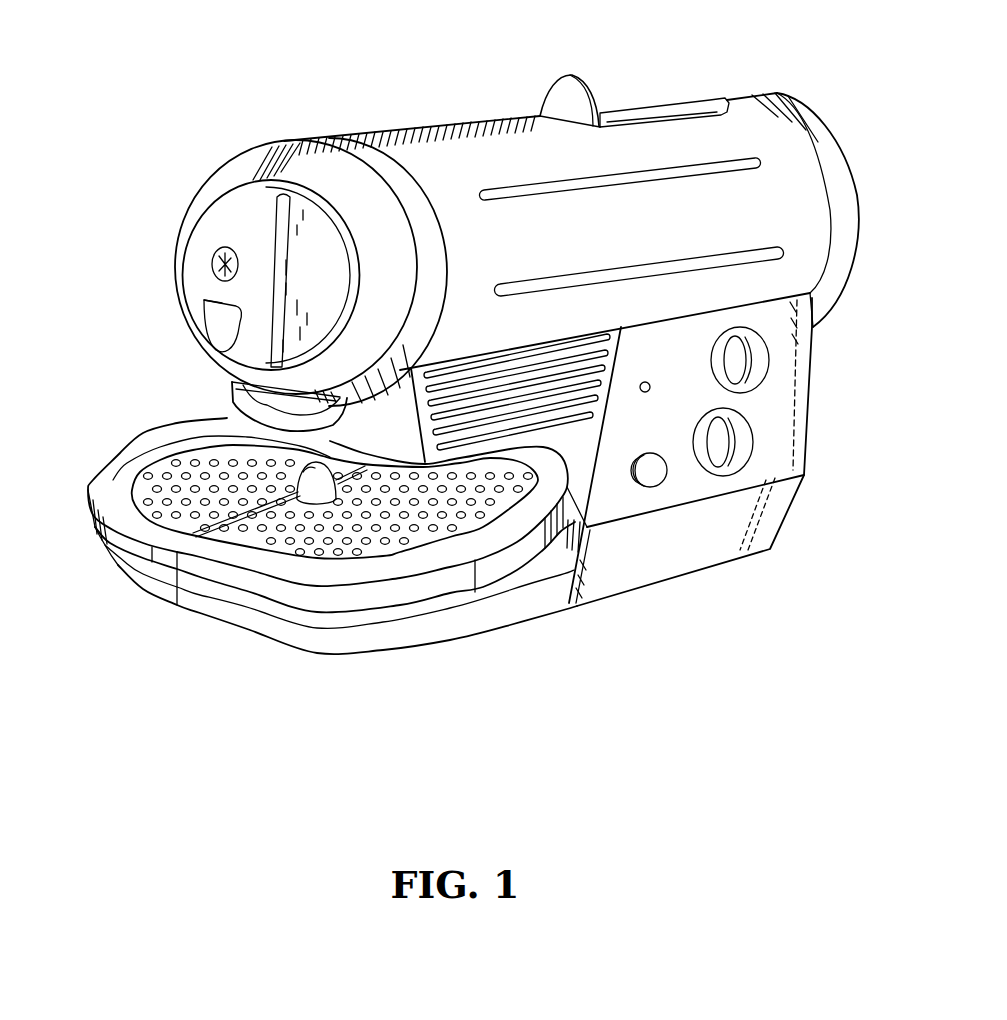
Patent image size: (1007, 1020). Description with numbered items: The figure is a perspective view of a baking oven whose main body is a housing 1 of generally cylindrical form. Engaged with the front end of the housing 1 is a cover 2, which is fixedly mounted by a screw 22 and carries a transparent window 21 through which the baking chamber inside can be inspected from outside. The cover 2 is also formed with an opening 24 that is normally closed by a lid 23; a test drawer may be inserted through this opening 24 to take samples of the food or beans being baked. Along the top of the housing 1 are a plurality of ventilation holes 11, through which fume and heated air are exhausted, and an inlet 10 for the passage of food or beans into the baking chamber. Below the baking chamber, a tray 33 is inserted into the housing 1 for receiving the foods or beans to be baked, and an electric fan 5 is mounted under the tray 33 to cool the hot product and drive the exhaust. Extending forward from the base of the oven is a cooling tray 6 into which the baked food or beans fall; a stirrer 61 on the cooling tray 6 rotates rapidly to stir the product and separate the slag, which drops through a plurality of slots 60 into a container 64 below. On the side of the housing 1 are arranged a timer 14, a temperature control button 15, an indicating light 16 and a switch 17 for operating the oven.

The housing 1 is at (802, 195).
The cover 2 is at (345, 143).
The electric fan 5 is at (497, 413).
The cooling tray 6 is at (170, 563).
The inlet 10 is at (674, 112).
The ventilation holes 11 is at (493, 117).
The timer 14 is at (757, 360).
The temperature control button 15 is at (733, 457).
The indicating light 16 is at (650, 391).
The switch 17 is at (646, 477).
The transparent window 21 is at (303, 217).
The screw 22 is at (216, 250).
The lid 23 is at (220, 327).
The opening 24 is at (214, 298).
The tray 33 is at (262, 403).
The slots 60 is at (323, 547).
The stirrer 61 is at (207, 530).
The container 64 is at (220, 602).